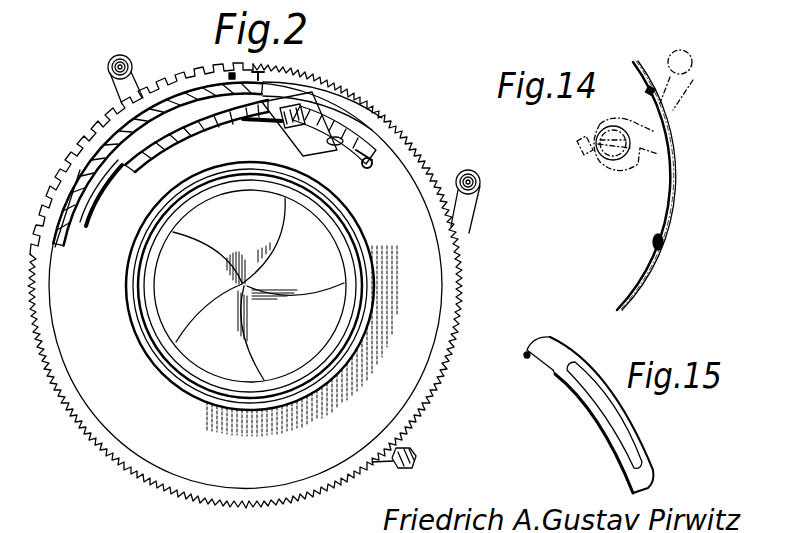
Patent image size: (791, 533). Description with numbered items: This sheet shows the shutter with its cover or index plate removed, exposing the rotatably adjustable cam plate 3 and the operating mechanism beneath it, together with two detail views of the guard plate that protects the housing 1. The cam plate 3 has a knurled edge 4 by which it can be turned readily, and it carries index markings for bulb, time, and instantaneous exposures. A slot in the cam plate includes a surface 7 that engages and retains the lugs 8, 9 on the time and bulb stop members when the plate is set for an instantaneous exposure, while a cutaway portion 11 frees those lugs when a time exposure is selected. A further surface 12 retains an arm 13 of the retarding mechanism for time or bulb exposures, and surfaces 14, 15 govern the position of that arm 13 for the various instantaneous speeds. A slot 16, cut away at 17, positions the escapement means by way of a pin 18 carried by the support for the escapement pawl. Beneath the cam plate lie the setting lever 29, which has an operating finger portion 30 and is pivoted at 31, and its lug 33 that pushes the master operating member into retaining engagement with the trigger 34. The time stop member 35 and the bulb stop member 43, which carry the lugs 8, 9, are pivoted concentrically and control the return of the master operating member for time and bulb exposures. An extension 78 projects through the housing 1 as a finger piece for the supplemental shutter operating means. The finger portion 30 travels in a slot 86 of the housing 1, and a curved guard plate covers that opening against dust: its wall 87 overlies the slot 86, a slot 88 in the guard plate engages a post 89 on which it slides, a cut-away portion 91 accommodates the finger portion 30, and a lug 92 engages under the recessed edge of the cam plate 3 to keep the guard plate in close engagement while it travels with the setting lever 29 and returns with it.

In FIG. 14, the housing 1 is at (638, 293).
In FIG. 2, the cam plate 3 is at (430, 275).
In FIG. 2, the knurled edge 4 is at (68, 422).
In FIG. 2, the surface 7 is at (116, 170).
In FIG. 2, the lug 8 is at (291, 122).
In FIG. 2, the lug 9 is at (320, 115).
In FIG. 2, the cutaway portion 11 is at (305, 105).
In FIG. 2, the surface 12 is at (360, 170).
In FIG. 2, the arm 13 is at (372, 158).
In FIG. 2, the surface 14 is at (306, 135).
In FIG. 2, the surface 15 is at (213, 125).
In FIG. 2, the slot 16 is at (74, 158).
In FIG. 2, the cut away portion of slot 17 is at (193, 80).
In FIG. 2, the pin 18 is at (296, 48).
In FIG. 14, the setting lever 29 is at (613, 167).
In FIG. 2, the operating finger portion 30 is at (470, 205).
In FIG. 14, the operating finger portion 30 is at (677, 100).
In FIG. 14, the pivot 31 is at (606, 130).
In FIG. 14, the lug 33 is at (582, 152).
In FIG. 2, the trigger 34 is at (117, 88).
In FIG. 2, the time stop member 35 is at (282, 128).
In FIG. 2, the bulb stop member 43 is at (333, 146).
In FIG. 2, the extension 78 is at (410, 450).
In FIG. 14, the slot 86 is at (662, 220).
In FIG. 14, the wall 87 is at (672, 187).
In FIG. 15, the wall 87 is at (600, 425).
In FIG. 15, the slot 88 is at (635, 446).
In FIG. 14, the post 89 is at (667, 243).
In FIG. 14, the cut-away portion 91 is at (667, 117).
In FIG. 15, the cut-away portion 91 is at (547, 374).
In FIG. 14, the lug 92 is at (652, 88).
In FIG. 15, the lug 92 is at (524, 360).